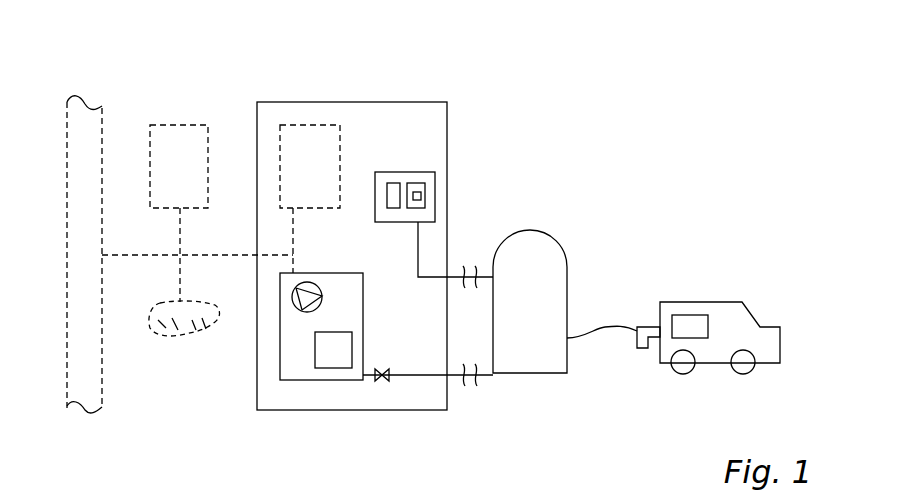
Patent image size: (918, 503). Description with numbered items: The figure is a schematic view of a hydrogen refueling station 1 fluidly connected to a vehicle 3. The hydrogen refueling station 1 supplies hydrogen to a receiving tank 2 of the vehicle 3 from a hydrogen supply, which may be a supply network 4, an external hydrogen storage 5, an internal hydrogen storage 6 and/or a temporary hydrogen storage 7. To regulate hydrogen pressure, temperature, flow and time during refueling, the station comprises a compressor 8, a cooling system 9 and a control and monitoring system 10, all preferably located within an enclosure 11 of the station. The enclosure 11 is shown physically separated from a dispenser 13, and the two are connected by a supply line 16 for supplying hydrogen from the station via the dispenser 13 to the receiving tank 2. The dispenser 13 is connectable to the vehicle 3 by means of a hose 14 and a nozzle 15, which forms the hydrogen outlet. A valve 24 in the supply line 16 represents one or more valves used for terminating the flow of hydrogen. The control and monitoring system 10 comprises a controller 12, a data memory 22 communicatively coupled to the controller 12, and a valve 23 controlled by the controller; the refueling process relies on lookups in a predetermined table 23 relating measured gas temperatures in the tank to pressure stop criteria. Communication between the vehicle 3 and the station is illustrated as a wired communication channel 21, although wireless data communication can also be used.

The hydrogen refueling station 1 is at (625, 80).
The receiving tank 2 is at (693, 315).
The vehicle 3 is at (753, 310).
The supply network 4 is at (97, 112).
The external hydrogen storage 5 is at (183, 125).
The internal hydrogen storage 6 is at (308, 125).
The temporary hydrogen storage 7 is at (190, 327).
The compressor 8 is at (292, 297).
The cooling system 9 is at (333, 368).
The control and monitoring system 10 is at (435, 205).
The enclosure 11 is at (360, 102).
The controller 12 is at (393, 183).
The dispenser 13 is at (553, 240).
The hose 14 is at (604, 326).
The nozzle 15 is at (641, 350).
The supply line 16 is at (458, 377).
The wired communication channel 21 is at (455, 277).
The data memory 22 is at (413, 183).
The valve 23 is at (421, 196).
The valve 24 is at (382, 382).